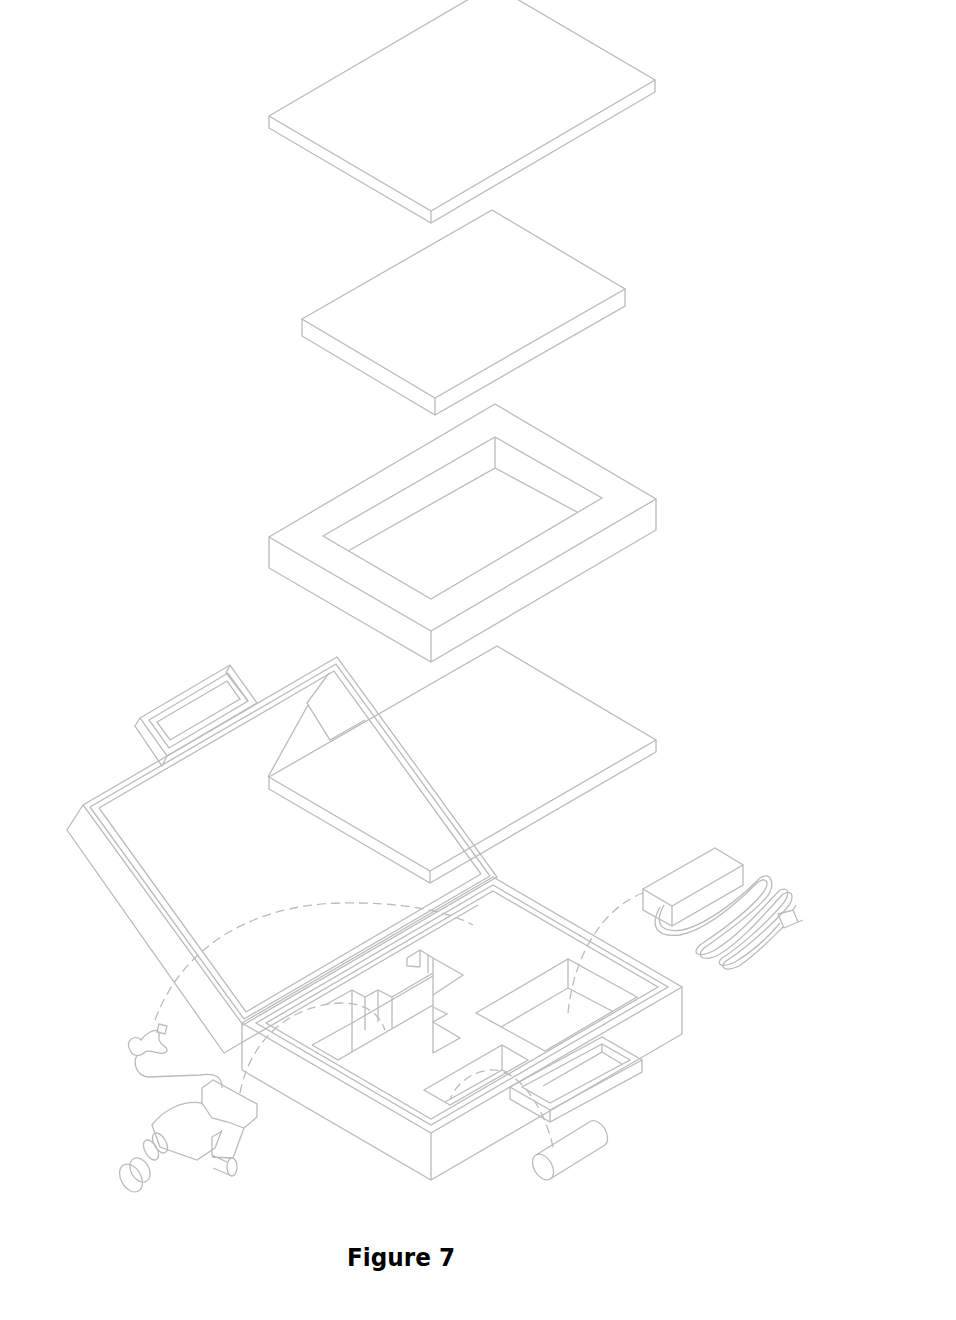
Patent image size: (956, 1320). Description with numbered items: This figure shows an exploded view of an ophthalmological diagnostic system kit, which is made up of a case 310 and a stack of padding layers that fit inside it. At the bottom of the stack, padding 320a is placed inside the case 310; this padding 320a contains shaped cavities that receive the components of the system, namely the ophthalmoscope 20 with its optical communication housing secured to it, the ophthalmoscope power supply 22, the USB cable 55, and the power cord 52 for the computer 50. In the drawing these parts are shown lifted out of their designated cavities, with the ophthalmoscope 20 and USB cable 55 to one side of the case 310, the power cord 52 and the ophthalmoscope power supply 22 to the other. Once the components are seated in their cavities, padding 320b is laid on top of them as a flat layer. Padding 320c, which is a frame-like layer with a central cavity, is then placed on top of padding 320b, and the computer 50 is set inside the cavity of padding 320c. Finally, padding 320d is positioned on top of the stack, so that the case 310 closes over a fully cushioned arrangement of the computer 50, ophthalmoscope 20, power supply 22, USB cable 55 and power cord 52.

The padding 320d is at (269, 116).
The computer 50 is at (302, 319).
The padding 320c is at (269, 537).
The padding 320b is at (607, 704).
The power cord 52 is at (668, 870).
The case 310 is at (682, 1013).
The padding 320a is at (383, 1065).
The ophthalmoscope power supply 22 is at (602, 1127).
The USB cable 55 is at (133, 1023).
The ophthalmoscope 20 is at (210, 1167).